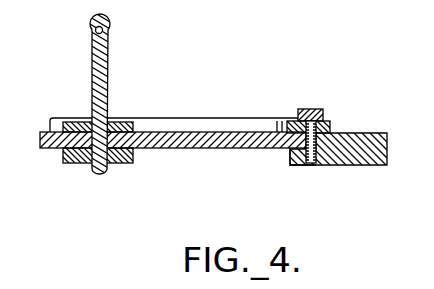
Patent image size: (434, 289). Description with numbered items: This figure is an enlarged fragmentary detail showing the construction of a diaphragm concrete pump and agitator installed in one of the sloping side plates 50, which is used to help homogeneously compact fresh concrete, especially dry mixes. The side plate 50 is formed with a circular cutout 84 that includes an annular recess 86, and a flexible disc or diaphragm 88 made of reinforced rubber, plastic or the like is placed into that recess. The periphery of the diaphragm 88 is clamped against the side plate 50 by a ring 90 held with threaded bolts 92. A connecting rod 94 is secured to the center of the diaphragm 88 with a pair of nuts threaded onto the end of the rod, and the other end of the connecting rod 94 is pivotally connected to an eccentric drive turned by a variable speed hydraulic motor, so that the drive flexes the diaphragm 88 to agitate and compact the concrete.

The sloping side plate 50 is at (374, 133).
The circular cutout 84 is at (289, 160).
The annular recess 86 is at (344, 148).
The flexible disc or diaphragm 88 is at (184, 149).
The ring 90 is at (330, 125).
The threaded bolt 92 is at (304, 109).
The connecting rod 94 is at (107, 76).